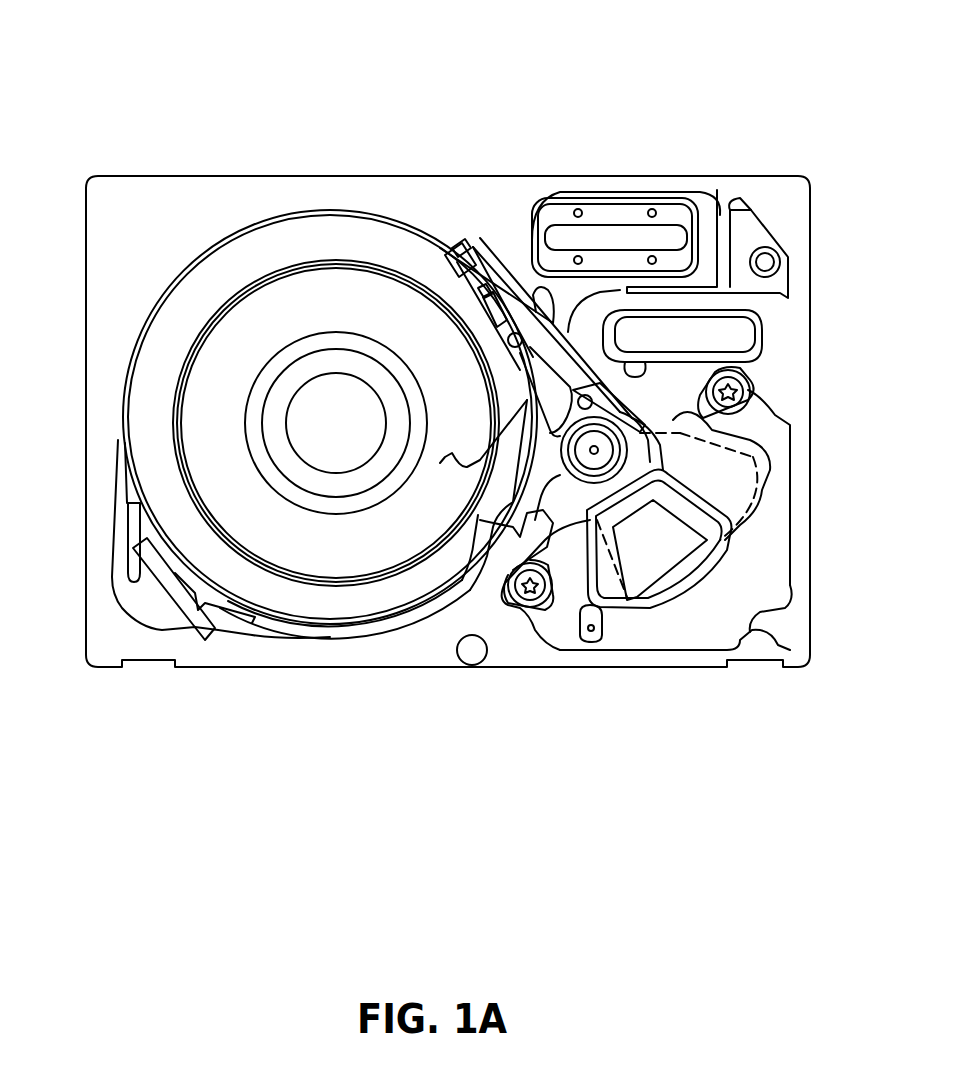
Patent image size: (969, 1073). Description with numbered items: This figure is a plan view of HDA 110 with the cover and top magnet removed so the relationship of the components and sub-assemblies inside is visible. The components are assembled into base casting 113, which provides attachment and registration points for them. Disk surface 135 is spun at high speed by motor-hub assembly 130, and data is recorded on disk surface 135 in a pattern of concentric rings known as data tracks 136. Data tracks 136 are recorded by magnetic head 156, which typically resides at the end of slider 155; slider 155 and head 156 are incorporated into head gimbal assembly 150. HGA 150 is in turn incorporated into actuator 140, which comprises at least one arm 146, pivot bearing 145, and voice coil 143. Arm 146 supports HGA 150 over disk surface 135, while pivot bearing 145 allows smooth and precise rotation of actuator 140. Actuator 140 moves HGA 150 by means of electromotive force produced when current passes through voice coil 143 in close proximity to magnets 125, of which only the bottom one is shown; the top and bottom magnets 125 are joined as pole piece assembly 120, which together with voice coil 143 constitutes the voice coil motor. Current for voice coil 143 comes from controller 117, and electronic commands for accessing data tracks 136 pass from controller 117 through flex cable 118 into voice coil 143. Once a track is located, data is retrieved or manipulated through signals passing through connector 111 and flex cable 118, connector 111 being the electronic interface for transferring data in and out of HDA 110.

The HDA 110 is at (168, 115).
The connector 111 is at (613, 213).
The base casting 113 is at (107, 380).
The controller 117 is at (718, 215).
The flex cable 118 is at (568, 333).
The pole piece assembly 120 is at (728, 427).
The magnets 125 is at (717, 478).
The motor-hub assembly 130 is at (328, 410).
The disk surface 135 is at (249, 272).
The data tracks 136 is at (175, 480).
The actuator 140 is at (561, 473).
The voice coil 143 is at (715, 533).
The pivot bearing 145 is at (594, 455).
The arm 146 is at (440, 463).
The head gimbal assembly 150 is at (480, 252).
The slider 155 is at (463, 253).
The magnetic head 156 is at (442, 252).